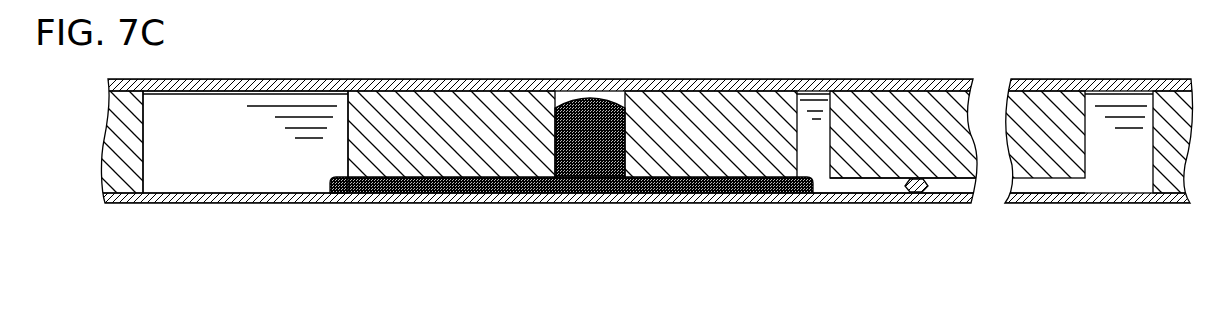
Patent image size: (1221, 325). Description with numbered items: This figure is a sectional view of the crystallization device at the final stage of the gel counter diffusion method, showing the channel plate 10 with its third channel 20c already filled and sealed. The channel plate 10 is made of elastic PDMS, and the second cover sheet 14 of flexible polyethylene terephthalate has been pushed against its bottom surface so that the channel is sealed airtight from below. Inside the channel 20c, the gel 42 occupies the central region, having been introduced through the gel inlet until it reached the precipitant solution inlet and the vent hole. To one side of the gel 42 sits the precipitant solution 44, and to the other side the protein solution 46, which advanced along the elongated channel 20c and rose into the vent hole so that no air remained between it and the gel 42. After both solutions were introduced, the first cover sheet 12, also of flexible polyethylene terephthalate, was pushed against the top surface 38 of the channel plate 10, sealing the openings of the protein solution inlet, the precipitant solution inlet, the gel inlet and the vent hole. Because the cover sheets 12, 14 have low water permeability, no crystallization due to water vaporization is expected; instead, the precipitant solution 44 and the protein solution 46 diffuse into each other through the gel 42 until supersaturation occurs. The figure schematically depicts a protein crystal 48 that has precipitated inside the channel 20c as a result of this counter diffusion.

The channel plate 10 is at (895, 100).
The first cover sheet 12 is at (738, 84).
The second cover sheet 14 is at (773, 200).
The third channel 20c is at (957, 196).
The top surface 38 is at (681, 92).
The gel 42 is at (591, 98).
The precipitant solution 44 is at (218, 104).
The protein solution 46 is at (813, 102).
The protein crystal 48 is at (901, 191).